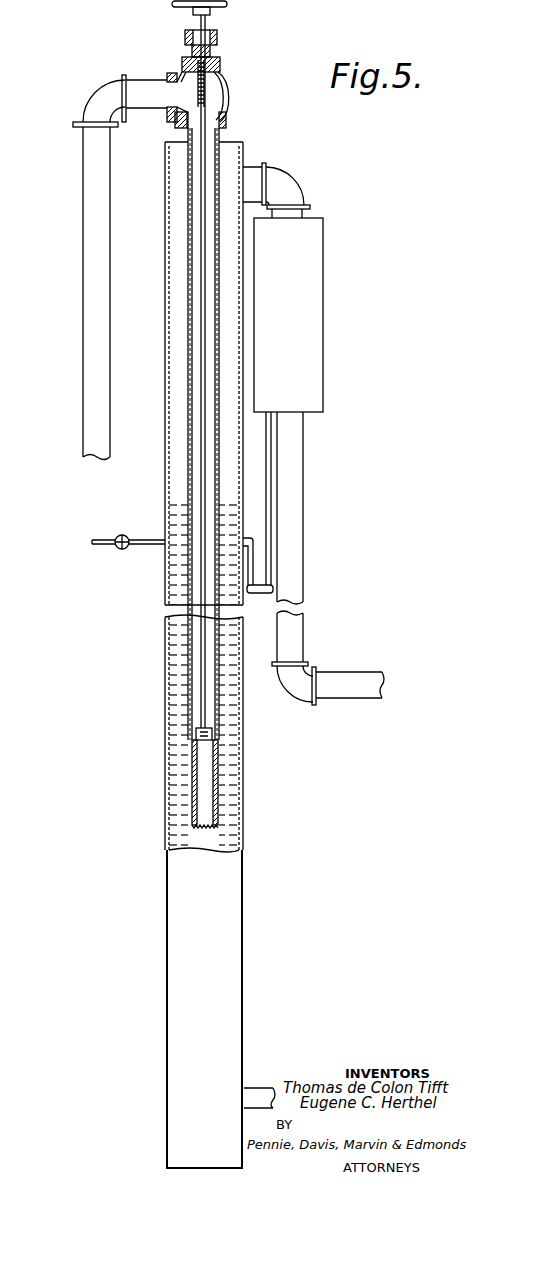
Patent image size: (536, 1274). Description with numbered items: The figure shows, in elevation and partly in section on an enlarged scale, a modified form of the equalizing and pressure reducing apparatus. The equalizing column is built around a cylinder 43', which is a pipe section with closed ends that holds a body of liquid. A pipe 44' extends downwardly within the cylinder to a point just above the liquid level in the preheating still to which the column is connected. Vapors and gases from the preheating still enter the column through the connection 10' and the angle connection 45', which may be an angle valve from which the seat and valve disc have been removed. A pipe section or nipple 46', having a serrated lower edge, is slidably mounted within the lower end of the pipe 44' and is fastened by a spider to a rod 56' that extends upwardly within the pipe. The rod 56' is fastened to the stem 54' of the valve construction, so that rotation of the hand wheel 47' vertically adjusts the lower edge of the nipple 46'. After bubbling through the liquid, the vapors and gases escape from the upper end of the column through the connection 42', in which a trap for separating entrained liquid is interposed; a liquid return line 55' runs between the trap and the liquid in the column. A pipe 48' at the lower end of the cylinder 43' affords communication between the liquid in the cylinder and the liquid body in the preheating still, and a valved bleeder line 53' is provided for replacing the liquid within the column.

The connection 10' is at (89, 267).
The connection 42' is at (313, 434).
The cylinder 43' is at (170, 655).
The pipe 44' is at (171, 434).
The angle connection 45' is at (227, 79).
The pipe section or nipple 46' is at (157, 787).
The hand wheel 47' is at (232, 14).
The pipe 48' is at (273, 1061).
The valved bleeder line 53' is at (121, 569).
The stem 54' is at (241, 70).
The liquid return line 55' is at (266, 525).
The rod 56' is at (167, 377).